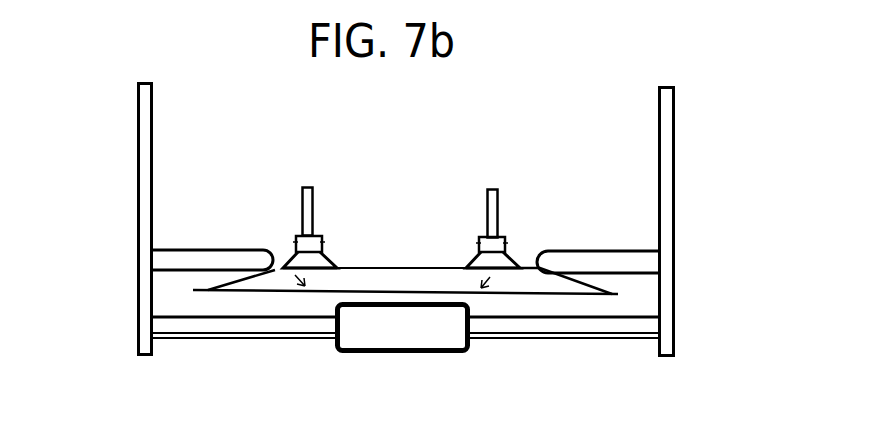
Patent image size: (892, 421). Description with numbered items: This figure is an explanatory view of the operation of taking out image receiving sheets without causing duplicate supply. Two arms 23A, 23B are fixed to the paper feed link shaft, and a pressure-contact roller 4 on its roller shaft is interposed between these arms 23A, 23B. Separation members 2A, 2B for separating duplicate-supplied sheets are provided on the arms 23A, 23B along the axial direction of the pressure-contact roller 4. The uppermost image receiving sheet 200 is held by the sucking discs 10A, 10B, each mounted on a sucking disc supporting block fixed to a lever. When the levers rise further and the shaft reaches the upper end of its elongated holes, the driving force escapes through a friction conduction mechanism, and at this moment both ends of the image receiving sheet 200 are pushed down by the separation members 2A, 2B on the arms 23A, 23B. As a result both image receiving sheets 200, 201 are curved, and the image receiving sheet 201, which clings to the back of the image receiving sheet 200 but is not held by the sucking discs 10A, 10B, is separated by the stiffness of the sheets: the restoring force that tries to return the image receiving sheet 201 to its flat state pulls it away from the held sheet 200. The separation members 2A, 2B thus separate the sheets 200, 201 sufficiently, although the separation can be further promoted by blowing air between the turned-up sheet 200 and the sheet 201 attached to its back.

The arm 23B is at (137, 154).
The arm 23A is at (675, 155).
The separation member 2B is at (205, 249).
The separation member 2A is at (597, 250).
The image receiving sheet 200 is at (380, 266).
The image receiving sheet 201 is at (447, 290).
The sucking disc 10B is at (293, 243).
The sucking disc 10A is at (507, 249).
The pressure-contact roller 4 is at (430, 353).